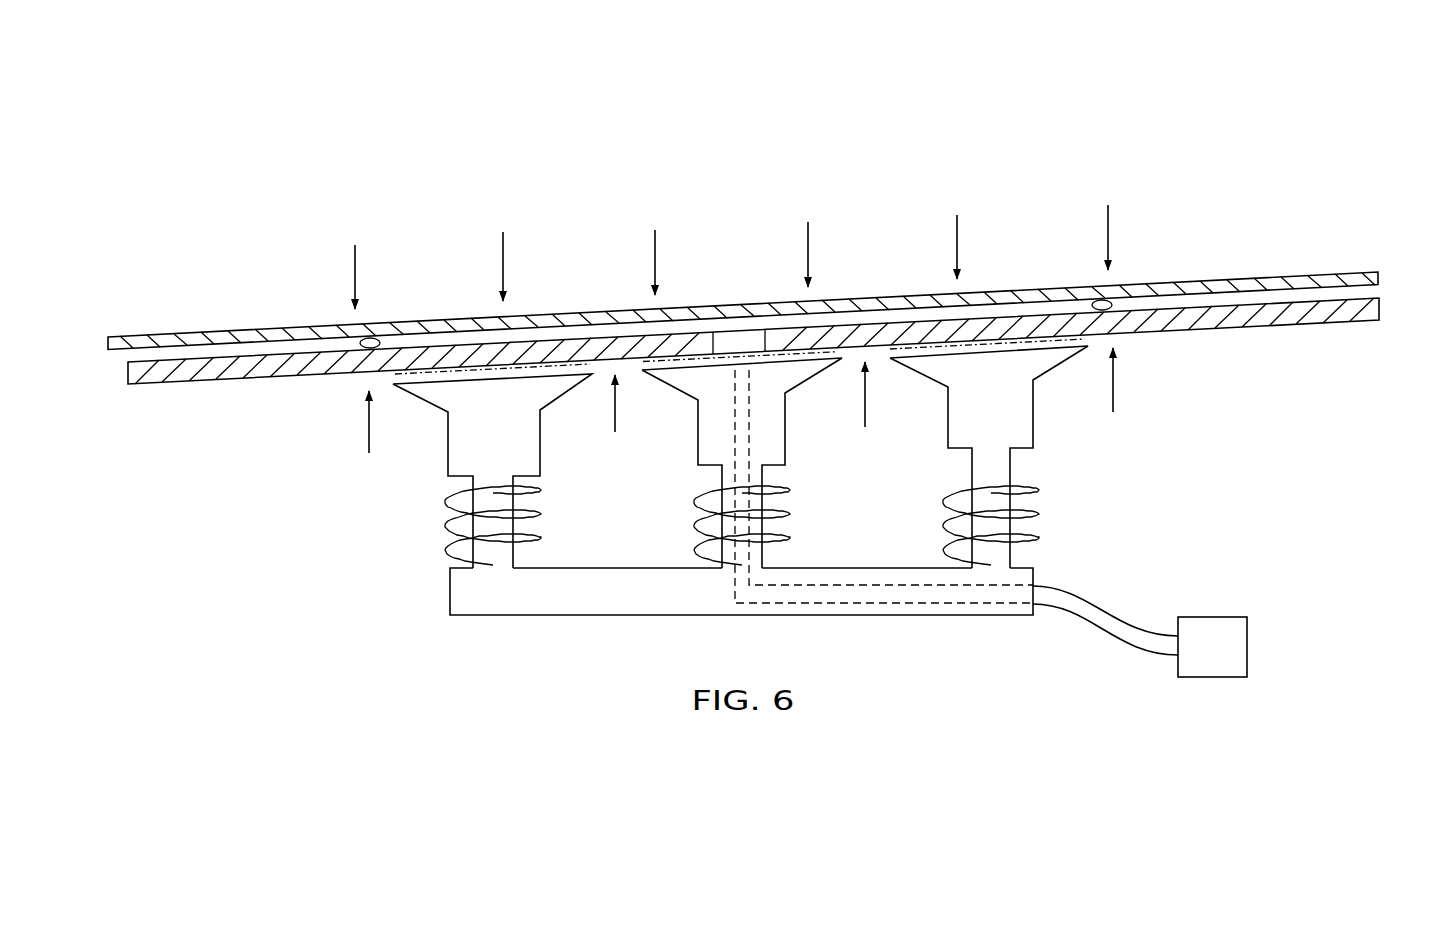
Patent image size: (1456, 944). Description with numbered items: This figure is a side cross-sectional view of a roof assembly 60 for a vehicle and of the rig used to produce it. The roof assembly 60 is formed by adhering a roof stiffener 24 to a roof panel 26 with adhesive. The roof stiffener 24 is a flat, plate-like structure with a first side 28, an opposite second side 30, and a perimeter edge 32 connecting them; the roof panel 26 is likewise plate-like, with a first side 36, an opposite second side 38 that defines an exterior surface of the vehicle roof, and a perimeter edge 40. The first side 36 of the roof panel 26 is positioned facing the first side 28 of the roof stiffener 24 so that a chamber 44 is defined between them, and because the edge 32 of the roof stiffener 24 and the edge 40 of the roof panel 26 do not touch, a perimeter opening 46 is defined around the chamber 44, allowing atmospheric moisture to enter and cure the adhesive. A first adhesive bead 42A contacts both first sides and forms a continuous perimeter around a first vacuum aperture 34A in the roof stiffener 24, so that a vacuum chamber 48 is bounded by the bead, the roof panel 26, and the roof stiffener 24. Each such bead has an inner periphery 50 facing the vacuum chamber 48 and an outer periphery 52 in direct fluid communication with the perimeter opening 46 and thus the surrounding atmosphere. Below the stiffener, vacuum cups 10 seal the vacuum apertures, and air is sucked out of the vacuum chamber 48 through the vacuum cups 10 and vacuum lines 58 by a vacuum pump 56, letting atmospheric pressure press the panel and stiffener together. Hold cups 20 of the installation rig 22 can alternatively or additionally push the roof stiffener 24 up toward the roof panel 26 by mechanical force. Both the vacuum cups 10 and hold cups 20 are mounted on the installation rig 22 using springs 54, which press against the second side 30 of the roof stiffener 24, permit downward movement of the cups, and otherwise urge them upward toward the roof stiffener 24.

The vacuum cup 10 is at (777, 427).
The hold cup 20 is at (751, 457).
The installation rig 22 is at (577, 598).
The roof stiffener 24 is at (283, 370).
The roof panel 26 is at (200, 341).
The first side of the roof stiffener 28 is at (1000, 311).
The second side of the roof stiffener 30 is at (1139, 338).
The perimeter edge of the roof stiffener 32 is at (127, 375).
The first vacuum aperture 34A is at (737, 335).
The first side of the roof panel 36 is at (1221, 298).
The second side of the roof panel 38 is at (887, 298).
The perimeter edge of the roof panel 40 is at (1385, 272).
The first adhesive bead 42A is at (372, 338).
The chamber 44 is at (227, 352).
The perimeter opening 46 is at (118, 358).
The vacuum chamber 48 is at (566, 333).
The inner periphery 50 is at (390, 343).
The outer periphery 52 is at (352, 343).
The spring 54 is at (447, 523).
The vacuum pump 56 is at (1212, 617).
The vacuum line 58 is at (905, 592).
The roof assembly 60 is at (1125, 138).